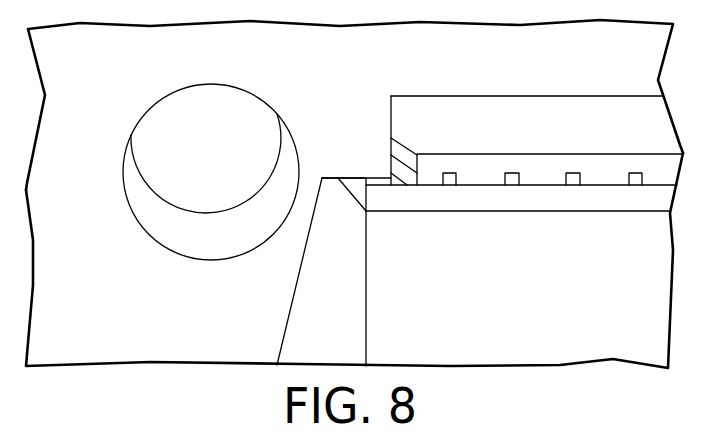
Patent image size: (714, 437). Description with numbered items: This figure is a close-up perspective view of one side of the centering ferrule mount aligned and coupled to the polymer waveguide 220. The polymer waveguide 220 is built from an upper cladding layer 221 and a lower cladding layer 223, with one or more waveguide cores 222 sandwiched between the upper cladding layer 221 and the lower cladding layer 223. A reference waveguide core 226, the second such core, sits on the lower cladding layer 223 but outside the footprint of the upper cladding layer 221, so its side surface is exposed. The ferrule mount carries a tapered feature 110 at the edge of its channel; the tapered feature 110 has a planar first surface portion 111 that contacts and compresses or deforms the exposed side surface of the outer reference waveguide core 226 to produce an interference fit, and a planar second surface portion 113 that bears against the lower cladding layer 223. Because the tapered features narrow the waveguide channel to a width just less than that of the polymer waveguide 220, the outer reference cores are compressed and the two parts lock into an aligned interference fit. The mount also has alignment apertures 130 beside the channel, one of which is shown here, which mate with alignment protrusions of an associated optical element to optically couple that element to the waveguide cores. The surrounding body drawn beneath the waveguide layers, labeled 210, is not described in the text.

The tapered feature 110 is at (341, 63).
The planar first surface portion 111 is at (389, 165).
The planar second surface portion 113 is at (378, 178).
The alignment aperture 130 is at (200, 195).
The second substrate 210 is at (568, 331).
The polymer waveguide 220 is at (497, 101).
The upper cladding layer 221 is at (571, 146).
The waveguide core 222 is at (446, 172).
The lower cladding layer 223 is at (443, 207).
The reference waveguide core 226 is at (400, 178).